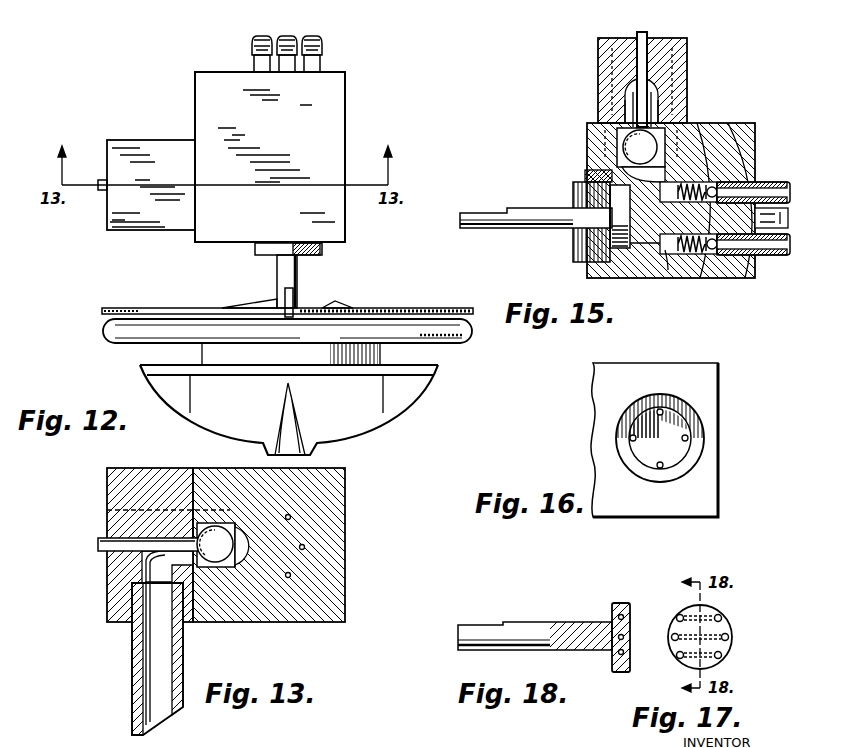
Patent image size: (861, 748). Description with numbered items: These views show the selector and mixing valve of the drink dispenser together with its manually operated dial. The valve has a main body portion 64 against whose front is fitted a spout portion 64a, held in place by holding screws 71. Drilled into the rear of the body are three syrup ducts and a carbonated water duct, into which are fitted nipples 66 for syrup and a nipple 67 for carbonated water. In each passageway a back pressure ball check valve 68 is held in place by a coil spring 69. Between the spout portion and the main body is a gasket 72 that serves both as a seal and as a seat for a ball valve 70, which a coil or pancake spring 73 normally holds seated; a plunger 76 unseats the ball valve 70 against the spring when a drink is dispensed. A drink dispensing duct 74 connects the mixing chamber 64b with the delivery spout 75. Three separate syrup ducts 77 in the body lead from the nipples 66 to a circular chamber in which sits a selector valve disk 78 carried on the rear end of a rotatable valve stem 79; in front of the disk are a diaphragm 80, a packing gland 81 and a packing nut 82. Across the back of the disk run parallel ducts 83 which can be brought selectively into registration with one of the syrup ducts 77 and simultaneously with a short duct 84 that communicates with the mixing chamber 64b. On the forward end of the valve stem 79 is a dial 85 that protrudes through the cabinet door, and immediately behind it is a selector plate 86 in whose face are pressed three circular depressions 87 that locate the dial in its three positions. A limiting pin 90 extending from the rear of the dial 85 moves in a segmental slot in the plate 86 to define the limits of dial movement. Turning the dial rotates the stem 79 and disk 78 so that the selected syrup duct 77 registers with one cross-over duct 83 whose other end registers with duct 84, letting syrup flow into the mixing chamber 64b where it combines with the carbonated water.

In FIG. 12, the main body portion 64 is at (334, 105).
In FIG. 13, the main body portion 64 is at (338, 584).
In FIG. 15, the main body portion 64 is at (671, 200).
In FIG. 16, the main body portion 64 is at (720, 388).
In FIG. 12, the spout portion 64a is at (137, 231).
In FIG. 13, the spout portion 64a is at (125, 481).
In FIG. 15, the spout portion 64a is at (688, 48).
In FIG. 13, the mixing chamber 64b is at (222, 523).
In FIG. 12, the nipples 66 is at (297, 38).
In FIG. 15, the nipples 66 is at (786, 250).
In FIG. 12, the nipple 67 is at (261, 36).
In FIG. 15, the nipple 67 is at (783, 184).
In FIG. 15, the back pressure ball check valves 68 is at (732, 125).
In FIG. 15, the coil spring 69 is at (700, 125).
In FIG. 13, the ball valve 70 is at (236, 580).
In FIG. 15, the ball valve 70 is at (632, 142).
In FIG. 13, the holding screws 71 is at (107, 514).
In FIG. 15, the holding screws 71 is at (600, 66).
In FIG. 13, the gasket 72 is at (205, 622).
In FIG. 15, the gasket 72 is at (686, 96).
In FIG. 13, the coil or pancake spring 73 is at (278, 622).
In FIG. 15, the coil or pancake spring 73 is at (617, 160).
In FIG. 13, the drink dispensing duct 74 is at (130, 578).
In FIG. 15, the drink dispensing duct 74 is at (628, 106).
In FIG. 13, the delivery spout 75 is at (138, 651).
In FIG. 12, the plunger 76 is at (101, 191).
In FIG. 13, the plunger 76 is at (103, 552).
In FIG. 15, the plunger 76 is at (648, 33).
In FIG. 13, the syrup ducts 77 is at (290, 575).
In FIG. 15, the syrup ducts 77 is at (668, 262).
In FIG. 16, the syrup ducts 77 is at (665, 410).
In FIG. 15, the selector valve disk 78 is at (587, 176).
In FIG. 18, the selector valve disk 78 is at (620, 603).
In FIG. 17, the selector valve disk 78 is at (722, 612).
In FIG. 12, the valve stem 79 is at (278, 276).
In FIG. 15, the valve stem 79 is at (492, 212).
In FIG. 18, the valve stem 79 is at (535, 625).
In FIG. 15, the diaphragm 80 is at (660, 248).
In FIG. 15, the packing gland 81 is at (575, 249).
In FIG. 12, the packing nut 82 is at (315, 256).
In FIG. 15, the packing nut 82 is at (615, 195).
In FIG. 18, the parallel ducts 83 is at (624, 651).
In FIG. 17, the parallel ducts 83 is at (728, 637).
In FIG. 15, the short duct 84 is at (620, 212).
In FIG. 16, the short duct 84 is at (630, 439).
In FIG. 12, the dial 85 is at (379, 407).
In FIG. 12, the selector plate 86 is at (425, 309).
In FIG. 12, the circular depressions 87 is at (250, 306).
In FIG. 12, the limiting pin 90 is at (296, 302).